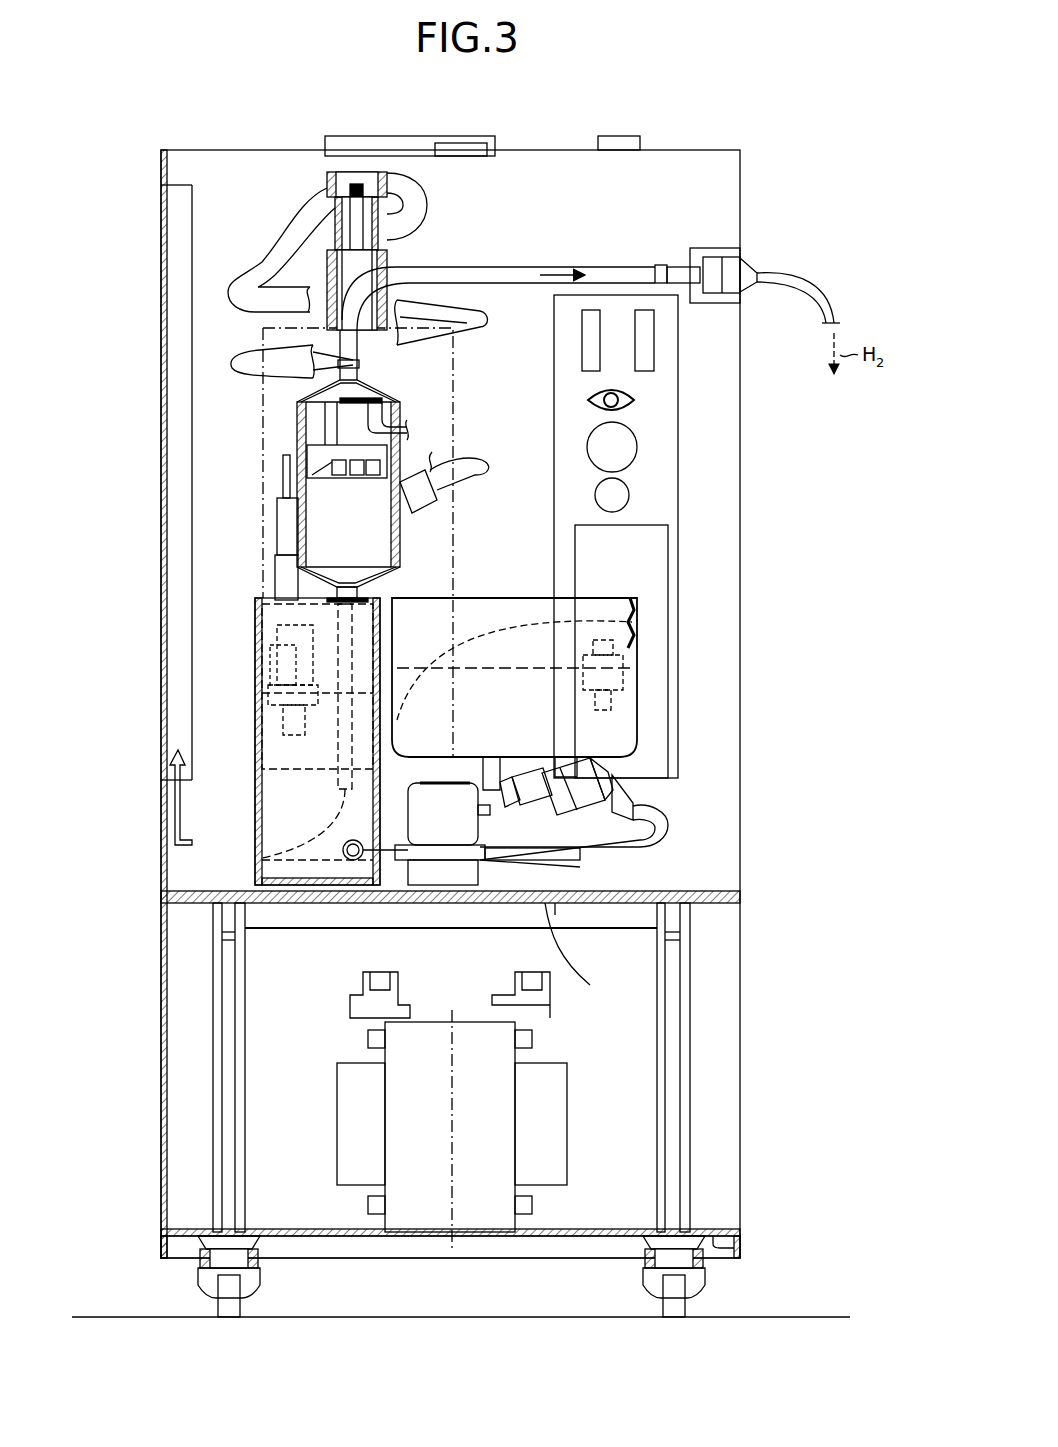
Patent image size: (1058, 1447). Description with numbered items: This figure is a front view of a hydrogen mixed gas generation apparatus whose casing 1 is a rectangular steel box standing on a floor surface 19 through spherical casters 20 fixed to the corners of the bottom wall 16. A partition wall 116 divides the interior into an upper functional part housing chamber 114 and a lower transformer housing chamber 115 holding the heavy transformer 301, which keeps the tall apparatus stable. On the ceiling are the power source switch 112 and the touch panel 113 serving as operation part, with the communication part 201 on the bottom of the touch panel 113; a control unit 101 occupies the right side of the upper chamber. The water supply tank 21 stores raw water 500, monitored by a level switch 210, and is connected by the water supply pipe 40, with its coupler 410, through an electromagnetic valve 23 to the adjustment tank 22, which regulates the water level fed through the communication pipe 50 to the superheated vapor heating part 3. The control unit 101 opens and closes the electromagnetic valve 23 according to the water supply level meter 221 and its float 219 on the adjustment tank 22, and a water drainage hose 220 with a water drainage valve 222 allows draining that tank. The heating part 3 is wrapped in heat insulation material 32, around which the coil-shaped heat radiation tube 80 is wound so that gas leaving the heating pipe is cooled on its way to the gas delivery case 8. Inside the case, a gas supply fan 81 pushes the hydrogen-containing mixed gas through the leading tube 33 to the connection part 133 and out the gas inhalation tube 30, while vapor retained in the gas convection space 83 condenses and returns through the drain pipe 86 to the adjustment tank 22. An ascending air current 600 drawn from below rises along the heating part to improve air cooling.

The casing 1 is at (158, 200).
The superheated vapor heating part 3 is at (262, 530).
The gas delivery case 8 is at (295, 491).
The bottom wall 16 is at (730, 1240).
The floor surface 19 is at (826, 1316).
The casters 20 is at (232, 1310).
The water supply tank 21 is at (603, 676).
The adjustment tank 22 is at (240, 625).
The electromagnetic valve 23 is at (430, 895).
The gas inhalation tube 30 is at (834, 292).
The heat insulation material 32 is at (280, 478).
The leading tube 33 is at (624, 262).
The water supply pipe 40 is at (645, 812).
The communication pipe 50 is at (348, 895).
The heat radiation tube 80 is at (222, 268).
The gas supply fan 81 is at (335, 455).
The gas convection space 83 is at (372, 540).
The drain pipe 86 is at (330, 840).
The control unit 101 is at (660, 445).
The power source switch 112 is at (622, 135).
The touch panel 113 is at (360, 135).
The functional part housing chamber 114 is at (652, 870).
The transformer housing chamber 115 is at (632, 1085).
The partition wall 116 is at (590, 985).
The connection part 133 is at (720, 248).
The communication part 201 is at (456, 142).
The level switch 210 is at (640, 680).
The float 219 is at (265, 690).
The water drainage hose 220 is at (565, 903).
The water supply level meter 221 is at (270, 572).
The water drainage valve 222 is at (458, 895).
The transformer 301 is at (405, 1212).
The coupler 410 is at (600, 800).
The raw water 500 is at (634, 620).
The ascending air current 600 is at (172, 820).